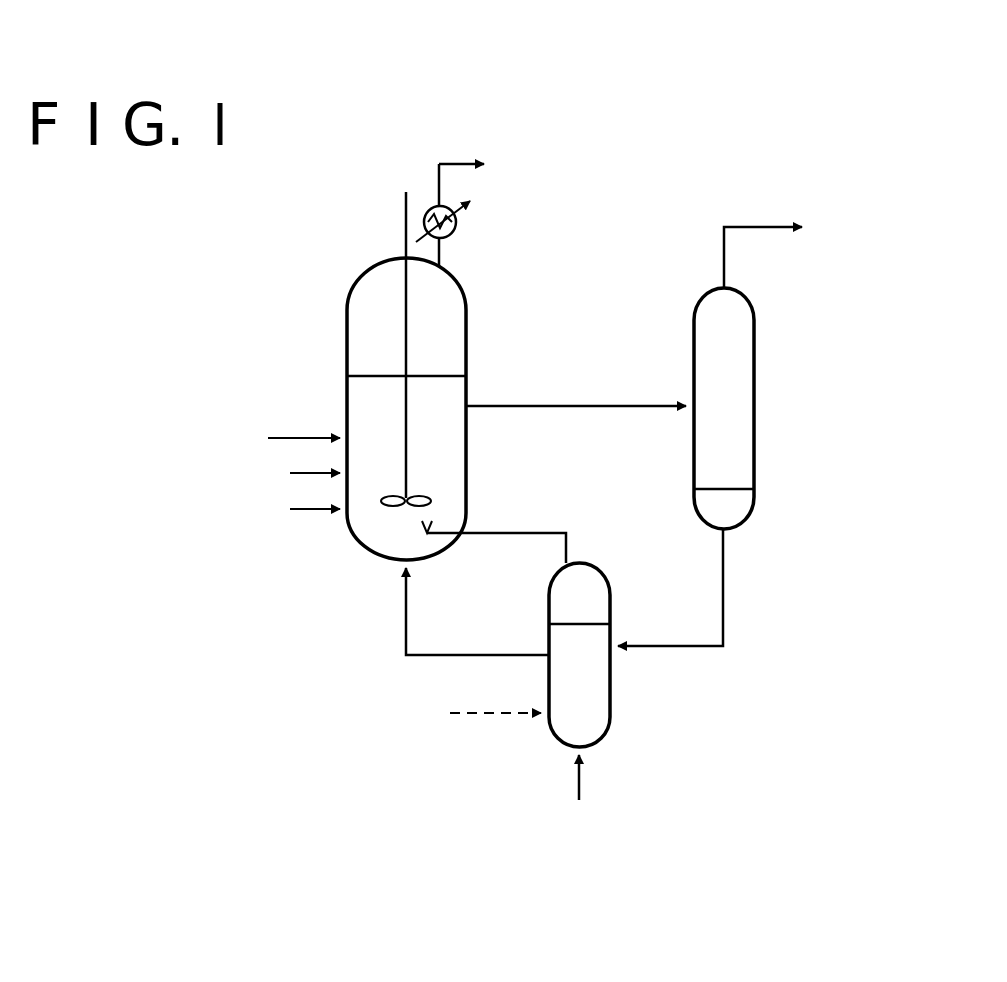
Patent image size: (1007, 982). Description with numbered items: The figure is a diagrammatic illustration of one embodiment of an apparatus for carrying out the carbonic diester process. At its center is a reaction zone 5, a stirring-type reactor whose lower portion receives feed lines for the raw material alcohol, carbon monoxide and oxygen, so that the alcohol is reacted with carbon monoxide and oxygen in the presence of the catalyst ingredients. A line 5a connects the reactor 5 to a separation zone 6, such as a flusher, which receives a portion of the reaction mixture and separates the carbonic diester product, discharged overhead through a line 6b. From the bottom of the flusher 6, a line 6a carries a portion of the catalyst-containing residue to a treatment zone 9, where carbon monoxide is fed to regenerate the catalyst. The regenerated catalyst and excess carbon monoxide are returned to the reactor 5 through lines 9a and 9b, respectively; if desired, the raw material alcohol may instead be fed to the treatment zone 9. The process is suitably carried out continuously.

The reaction zone 5 is at (466, 310).
The line 5a is at (578, 405).
The separation zone 6 is at (754, 368).
The line 6a is at (725, 582).
The line 6b is at (746, 226).
The treatment zone 9 is at (610, 707).
The line 9a is at (477, 654).
The line 9b is at (528, 532).